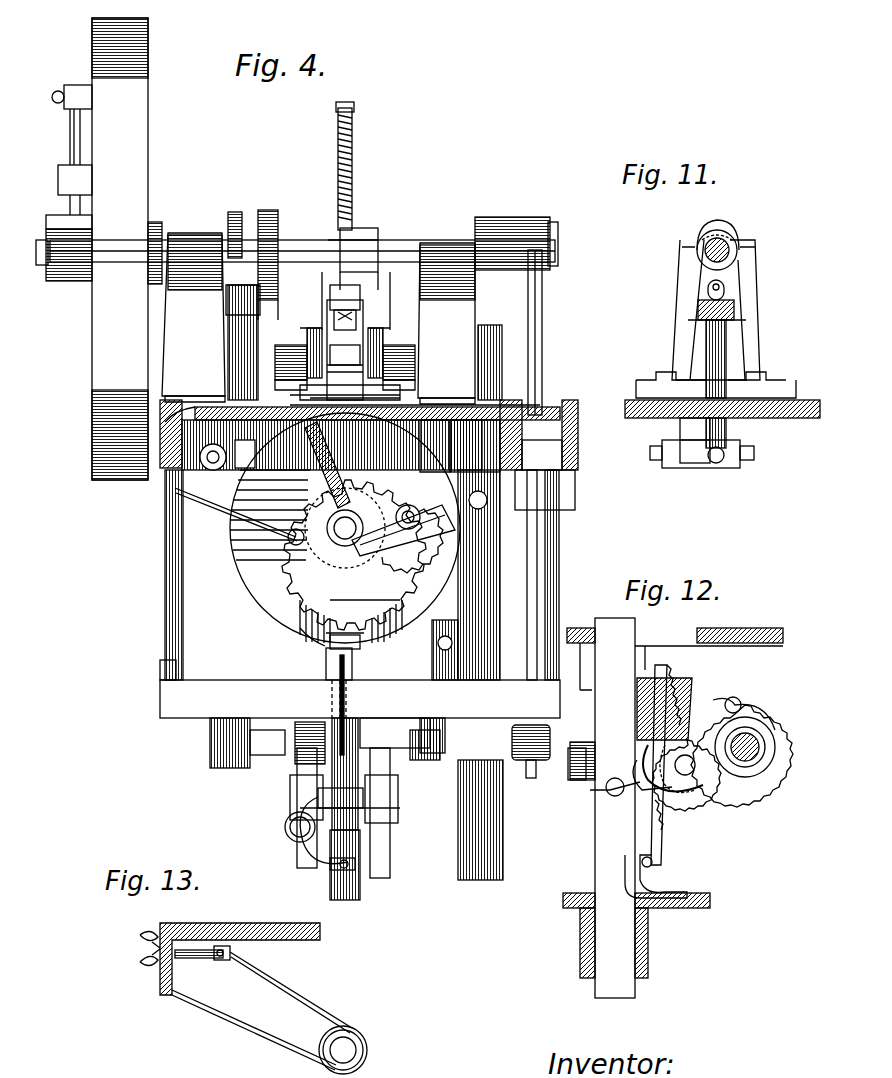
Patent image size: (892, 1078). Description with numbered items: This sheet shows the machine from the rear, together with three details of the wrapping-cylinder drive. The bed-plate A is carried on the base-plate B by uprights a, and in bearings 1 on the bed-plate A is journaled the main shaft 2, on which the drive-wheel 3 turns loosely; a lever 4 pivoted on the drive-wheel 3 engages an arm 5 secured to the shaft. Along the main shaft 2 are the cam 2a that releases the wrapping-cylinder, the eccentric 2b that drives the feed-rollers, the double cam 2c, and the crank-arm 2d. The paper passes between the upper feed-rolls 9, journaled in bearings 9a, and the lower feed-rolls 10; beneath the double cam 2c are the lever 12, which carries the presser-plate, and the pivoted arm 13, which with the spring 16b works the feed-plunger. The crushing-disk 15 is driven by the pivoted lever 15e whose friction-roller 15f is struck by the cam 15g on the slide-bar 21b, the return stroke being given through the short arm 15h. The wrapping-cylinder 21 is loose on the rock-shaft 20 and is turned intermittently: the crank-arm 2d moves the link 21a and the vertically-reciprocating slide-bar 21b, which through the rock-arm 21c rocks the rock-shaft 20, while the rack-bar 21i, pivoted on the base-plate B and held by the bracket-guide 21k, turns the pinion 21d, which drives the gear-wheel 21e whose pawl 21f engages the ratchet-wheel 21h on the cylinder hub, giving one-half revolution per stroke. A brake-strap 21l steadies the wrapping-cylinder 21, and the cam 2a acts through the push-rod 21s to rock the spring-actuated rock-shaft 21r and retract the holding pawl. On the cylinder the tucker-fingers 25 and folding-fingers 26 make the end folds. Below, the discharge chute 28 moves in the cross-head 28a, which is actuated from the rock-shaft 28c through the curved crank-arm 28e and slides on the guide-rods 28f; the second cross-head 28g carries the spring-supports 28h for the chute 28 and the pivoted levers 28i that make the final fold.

In FIG. 4, the bearings 1 is at (318, 318).
In FIG. 4, the main shaft 2 is at (44, 270).
In FIG. 11, the main shaft 2 is at (706, 257).
In FIG. 4, the cam 2a is at (236, 212).
In FIG. 11, the cam 2a is at (698, 228).
In FIG. 4, the eccentric 2b is at (266, 212).
In FIG. 4, the double cam 2c is at (372, 232).
In FIG. 4, the crank-arm 2d is at (505, 272).
In FIG. 4, the drive-wheel 3 is at (120, 249).
In FIG. 4, the lever 4 is at (82, 135).
In FIG. 4, the arm 5 is at (88, 212).
In FIG. 4, the upper feed-rolls 9 is at (312, 328).
In FIG. 4, the bearings 9a is at (290, 352).
In FIG. 4, the lower feed-rolls 10 is at (400, 398).
In FIG. 4, the lever 12 is at (350, 350).
In FIG. 4, the pivoted arm 13 is at (345, 307).
In FIG. 4, the crushing-disk 15 is at (300, 490).
In FIG. 4, the pivoted lever 15e is at (475, 446).
In FIG. 4, the friction-roller 15f is at (435, 470).
In FIG. 4, the cam 15g is at (470, 412).
In FIG. 12, the cam 15g is at (660, 690).
In FIG. 4, the short arm 15h is at (415, 403).
In FIG. 4, the spring 16b is at (355, 168).
In FIG. 4, the rock-shaft 20 is at (330, 540).
In FIG. 12, the rock-shaft 20 is at (755, 760).
In FIG. 13, the rock-shaft 20 is at (356, 1050).
In FIG. 13, the wrapping-cylinder 21 is at (150, 956).
In FIG. 4, the link 21a is at (542, 330).
In FIG. 12, the slide-bar 21b is at (602, 808).
In FIG. 4, the rock-arm 21c is at (408, 545).
In FIG. 13, the rock-arm 21c is at (305, 996).
In FIG. 4, the pinion 21d is at (410, 504).
In FIG. 12, the pinion 21d is at (700, 782).
In FIG. 4, the gear-wheel 21e is at (345, 570).
In FIG. 12, the gear-wheel 21e is at (778, 752).
In FIG. 12, the pawl 21f is at (745, 712).
In FIG. 12, the ratchet-wheel 21h is at (676, 790).
In FIG. 4, the rack-bar 21i is at (430, 590).
In FIG. 12, the rack-bar 21i is at (655, 878).
In FIG. 4, the bracket-guide 21k is at (470, 538).
In FIG. 12, the bracket-guide 21k is at (660, 822).
In FIG. 4, the brake-strap 21l is at (225, 480).
In FIG. 4, the spring-actuated rock-shaft 21r is at (168, 490).
In FIG. 11, the spring-actuated rock-shaft 21r is at (748, 455).
In FIG. 4, the push-rod 21s is at (238, 362).
In FIG. 11, the push-rod 21s is at (718, 368).
In FIG. 4, the tucker-fingers 25 is at (296, 638).
In FIG. 4, the folding-fingers 26 is at (362, 644).
In FIG. 4, the discharge chute 28 is at (356, 668).
In FIG. 4, the cross-head 28a is at (412, 752).
In FIG. 4, the rock-shaft 28c is at (448, 770).
In FIG. 4, the curved crank-arm 28e is at (530, 782).
In FIG. 4, the guide-rods 28f is at (408, 842).
In FIG. 4, the second cross-head 28g is at (292, 798).
In FIG. 4, the spring-supports 28h is at (290, 830).
In FIG. 4, the levers 28i is at (332, 680).
In FIG. 4, the bed-plate A is at (369, 434).
In FIG. 11, the bed-plate A is at (723, 397).
In FIG. 12, the bed-plate A is at (675, 647).
In FIG. 13, the bed-plate A is at (240, 949).
In FIG. 4, the base-plate B is at (500, 712).
In FIG. 12, the base-plate B is at (710, 904).
In FIG. 4, the uprights a is at (185, 628).
In FIG. 13, the spring m is at (139, 948).